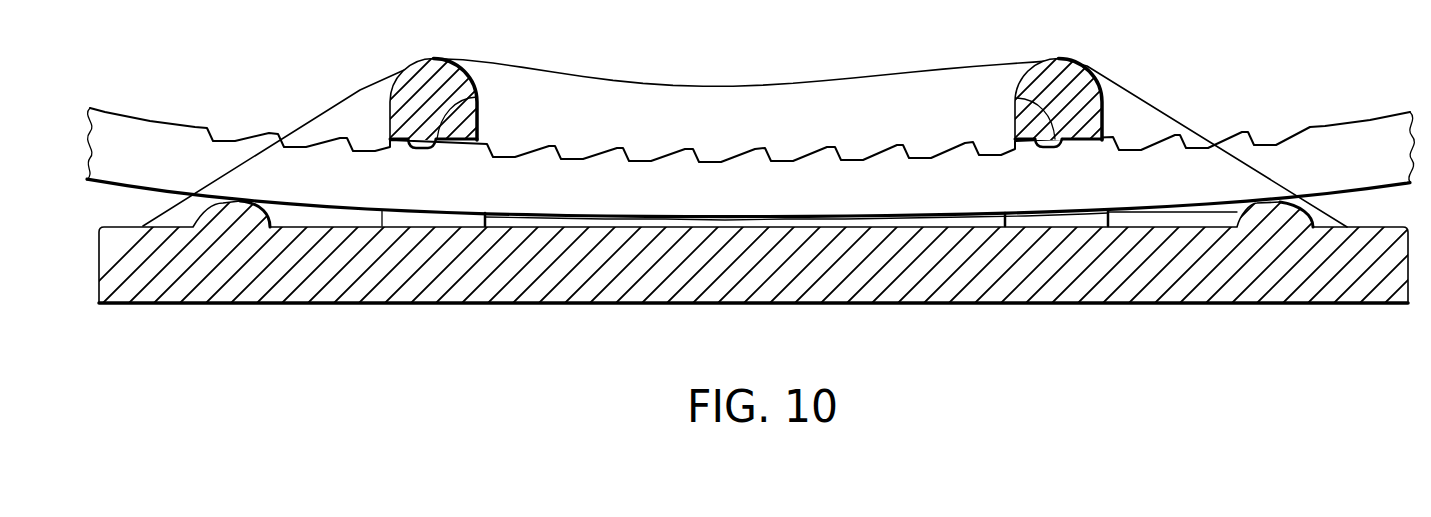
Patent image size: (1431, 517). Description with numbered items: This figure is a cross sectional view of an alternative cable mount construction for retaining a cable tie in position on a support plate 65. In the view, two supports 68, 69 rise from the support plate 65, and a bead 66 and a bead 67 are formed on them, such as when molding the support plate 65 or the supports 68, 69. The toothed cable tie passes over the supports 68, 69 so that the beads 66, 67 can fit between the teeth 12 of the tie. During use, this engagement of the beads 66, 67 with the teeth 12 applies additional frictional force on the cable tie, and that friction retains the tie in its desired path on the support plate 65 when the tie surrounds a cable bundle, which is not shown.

The teeth 12 is at (410, 148).
The support plate 65 is at (1272, 307).
The bead 66 is at (1017, 98).
The bead 67 is at (478, 96).
The support 68 is at (1043, 60).
The support 69 is at (433, 58).